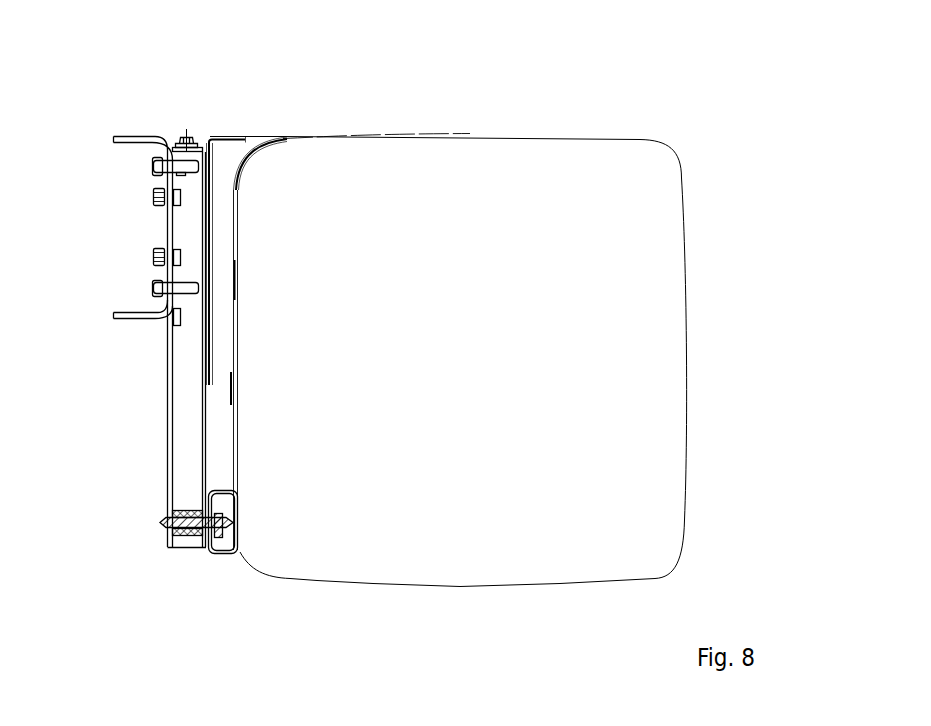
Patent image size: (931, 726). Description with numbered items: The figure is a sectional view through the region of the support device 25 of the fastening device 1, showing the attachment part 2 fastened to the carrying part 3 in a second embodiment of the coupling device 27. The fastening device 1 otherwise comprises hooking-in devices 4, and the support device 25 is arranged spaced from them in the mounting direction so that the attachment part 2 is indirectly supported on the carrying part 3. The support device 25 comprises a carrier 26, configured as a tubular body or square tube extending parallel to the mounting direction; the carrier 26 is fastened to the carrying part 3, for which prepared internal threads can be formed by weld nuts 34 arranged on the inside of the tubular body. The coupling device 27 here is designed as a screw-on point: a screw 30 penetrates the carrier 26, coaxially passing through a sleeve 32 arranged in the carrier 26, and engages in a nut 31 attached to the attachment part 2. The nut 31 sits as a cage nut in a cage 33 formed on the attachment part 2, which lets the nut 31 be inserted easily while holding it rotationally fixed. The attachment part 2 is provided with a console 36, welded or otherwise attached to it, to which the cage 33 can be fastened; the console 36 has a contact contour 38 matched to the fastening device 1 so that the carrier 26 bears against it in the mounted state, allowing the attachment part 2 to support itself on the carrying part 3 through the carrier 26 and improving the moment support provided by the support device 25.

The fastening device 1 is at (176, 112).
The attachment part 2 is at (578, 132).
The carrying part 3 is at (129, 130).
The hooking-in device 4 is at (193, 119).
The support device 25 is at (151, 474).
The carrier 26 is at (185, 417).
The coupling device 27 is at (191, 572).
The screw 30 is at (165, 519).
The nut 31 is at (215, 514).
The sleeve 32 is at (187, 534).
The cage 33 is at (221, 557).
The weld nuts 34 is at (177, 177).
The console 36 is at (238, 131).
The contact contour 38 is at (210, 290).